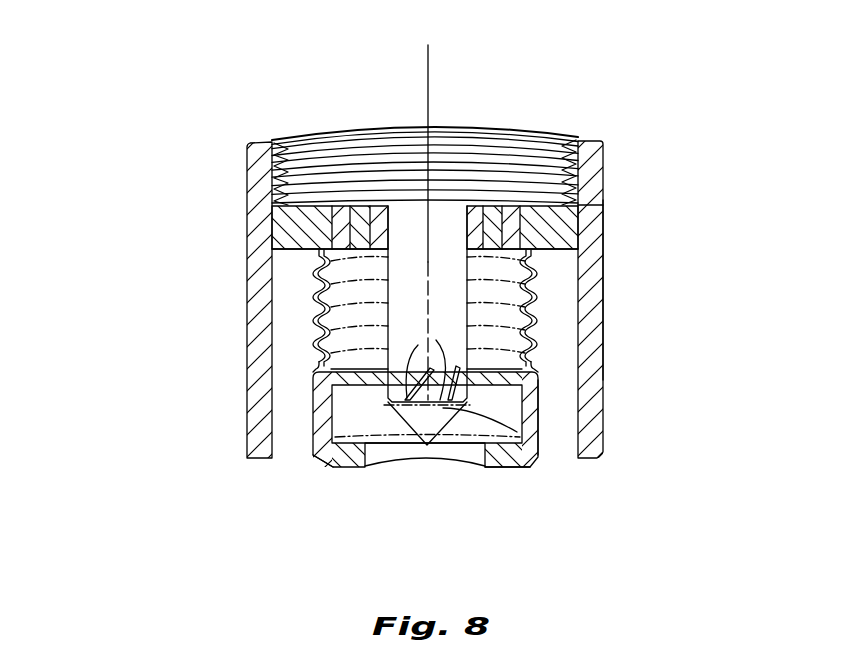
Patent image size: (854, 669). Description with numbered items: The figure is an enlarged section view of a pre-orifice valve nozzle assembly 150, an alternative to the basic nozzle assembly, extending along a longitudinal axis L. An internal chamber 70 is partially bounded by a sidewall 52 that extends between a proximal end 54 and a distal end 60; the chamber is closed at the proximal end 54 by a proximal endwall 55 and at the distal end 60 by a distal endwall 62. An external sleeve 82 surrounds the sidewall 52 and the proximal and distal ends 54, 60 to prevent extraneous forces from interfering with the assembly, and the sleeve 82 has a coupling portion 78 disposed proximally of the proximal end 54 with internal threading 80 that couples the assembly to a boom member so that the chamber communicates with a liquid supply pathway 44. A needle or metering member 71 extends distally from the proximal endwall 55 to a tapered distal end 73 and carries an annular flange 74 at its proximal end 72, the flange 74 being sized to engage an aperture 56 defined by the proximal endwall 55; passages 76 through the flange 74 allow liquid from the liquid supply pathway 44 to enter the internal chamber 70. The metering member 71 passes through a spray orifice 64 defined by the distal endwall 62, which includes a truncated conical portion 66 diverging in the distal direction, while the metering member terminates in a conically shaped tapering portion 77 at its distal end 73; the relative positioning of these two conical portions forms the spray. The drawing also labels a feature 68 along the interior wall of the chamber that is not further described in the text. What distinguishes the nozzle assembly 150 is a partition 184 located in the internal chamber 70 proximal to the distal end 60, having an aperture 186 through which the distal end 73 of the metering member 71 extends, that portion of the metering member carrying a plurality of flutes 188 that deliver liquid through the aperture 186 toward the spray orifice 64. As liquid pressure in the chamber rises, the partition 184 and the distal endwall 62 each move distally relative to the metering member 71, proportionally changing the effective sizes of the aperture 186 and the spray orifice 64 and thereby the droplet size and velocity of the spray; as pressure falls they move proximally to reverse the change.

The pre-orifice valve nozzle assembly 150 is at (166, 182).
The sidewall 52 is at (549, 269).
The proximal end 54 is at (587, 206).
The proximal endwall 55 is at (322, 205).
The aperture 56 is at (340, 233).
The distal end 60 is at (541, 468).
The distal endwall 62 is at (333, 468).
The spray orifice 64 is at (426, 465).
The truncated conical portion 66 is at (481, 463).
The threaded sleeve 68 is at (536, 322).
The internal chamber 70 is at (320, 318).
The metering member 71 is at (368, 263).
The proximal end 72 is at (366, 210).
The distal end 73 is at (540, 447).
The annular flange 74 is at (330, 207).
The passages 76 is at (342, 212).
The tapering portion 77 is at (393, 428).
The coupling portion 78 is at (584, 130).
The internal threading 80 is at (453, 157).
The external sleeve 82 is at (606, 290).
The partition 184 is at (536, 345).
The aperture 186 is at (325, 340).
The flutes 188 is at (418, 345).
The liquid supply pathway 44 is at (412, 202).
The longitudinal axis L is at (430, 67).